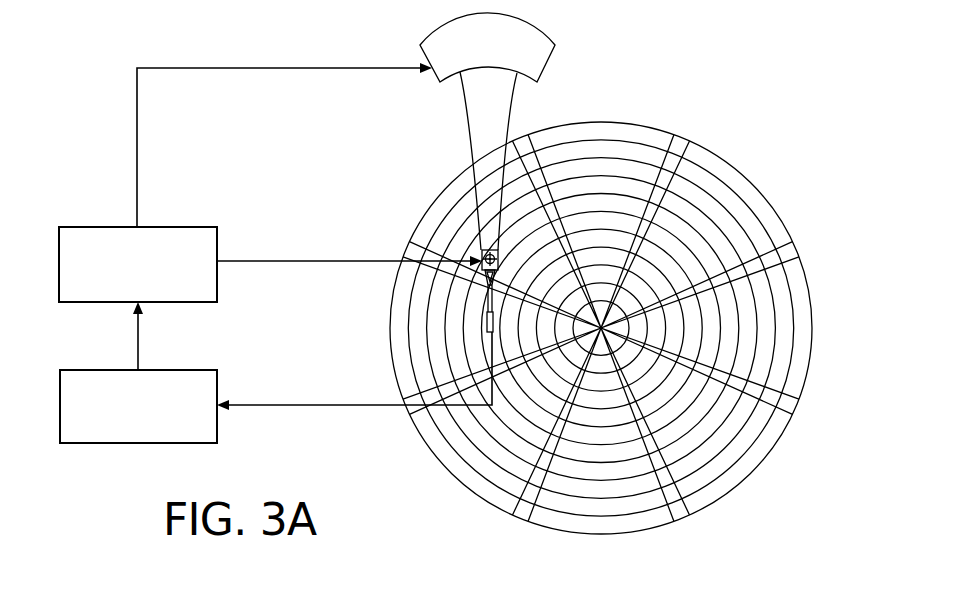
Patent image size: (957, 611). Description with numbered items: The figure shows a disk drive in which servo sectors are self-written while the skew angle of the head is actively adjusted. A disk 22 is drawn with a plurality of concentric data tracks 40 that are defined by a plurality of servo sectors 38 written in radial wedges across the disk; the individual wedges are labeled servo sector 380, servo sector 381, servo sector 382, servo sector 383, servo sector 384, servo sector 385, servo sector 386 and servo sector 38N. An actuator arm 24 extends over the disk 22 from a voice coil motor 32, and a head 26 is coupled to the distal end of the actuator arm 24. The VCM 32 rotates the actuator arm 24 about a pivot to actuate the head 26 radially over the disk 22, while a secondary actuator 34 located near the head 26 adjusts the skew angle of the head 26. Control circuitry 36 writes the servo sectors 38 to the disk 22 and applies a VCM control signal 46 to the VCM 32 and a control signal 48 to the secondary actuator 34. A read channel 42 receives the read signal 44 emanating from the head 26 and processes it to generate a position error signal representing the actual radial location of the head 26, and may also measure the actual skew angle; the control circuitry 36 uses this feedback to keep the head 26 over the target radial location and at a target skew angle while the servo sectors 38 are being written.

The disk 22 is at (750, 160).
The actuator arm 24 is at (468, 150).
The head 26 is at (485, 328).
The voice coil motor 32 is at (432, 78).
The secondary actuator 34 is at (487, 248).
The control circuitry 36 is at (84, 226).
The servo sectors 38 is at (610, 332).
The servo sector N 38N is at (530, 136).
The servo sector 0 380 is at (683, 137).
The servo sector 1 381 is at (790, 250).
The servo sector 2 382 is at (790, 406).
The servo sector 3 383 is at (678, 517).
The servo sector 4 384 is at (520, 513).
The servo sector 5 385 is at (408, 407).
The servo sector 6 386 is at (406, 255).
The data tracks 40 is at (598, 146).
The read channel 42 is at (84, 369).
The read signal 44 is at (289, 408).
The VCM control signal 46 is at (272, 70).
The control signal 48 is at (275, 264).